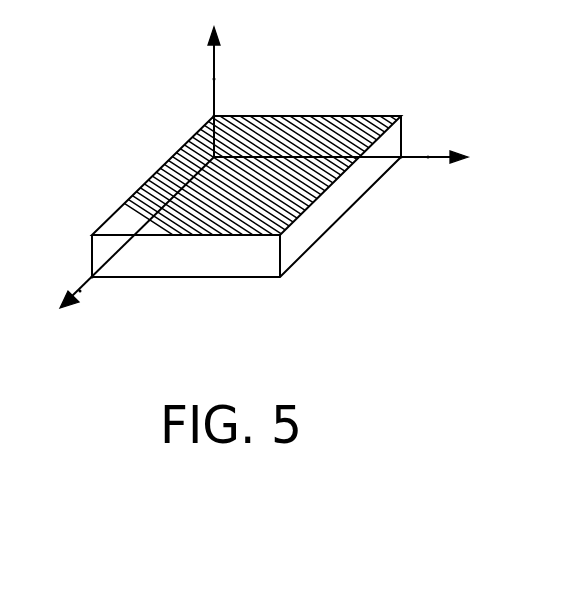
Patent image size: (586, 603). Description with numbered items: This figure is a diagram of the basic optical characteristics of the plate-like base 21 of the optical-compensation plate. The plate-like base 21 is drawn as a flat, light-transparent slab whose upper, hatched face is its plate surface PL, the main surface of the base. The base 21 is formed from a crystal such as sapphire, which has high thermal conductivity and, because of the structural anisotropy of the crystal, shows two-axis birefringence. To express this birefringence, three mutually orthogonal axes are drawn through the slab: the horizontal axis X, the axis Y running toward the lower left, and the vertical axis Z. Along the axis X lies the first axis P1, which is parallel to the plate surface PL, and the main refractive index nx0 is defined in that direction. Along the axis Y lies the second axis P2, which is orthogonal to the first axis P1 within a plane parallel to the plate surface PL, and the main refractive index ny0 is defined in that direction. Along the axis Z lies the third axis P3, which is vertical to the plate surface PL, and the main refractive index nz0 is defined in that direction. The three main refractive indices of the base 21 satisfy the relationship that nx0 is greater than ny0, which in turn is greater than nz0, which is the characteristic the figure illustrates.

The plate-like base 21 is at (150, 178).
The plate surface PL is at (327, 119).
The first axis P1 is at (428, 156).
The second axis P2 is at (79, 291).
The third axis P3 is at (212, 79).
The main refractive index in the first axis direction nx0 is at (420, 173).
The main refractive index in the second axis direction ny0 is at (111, 293).
The main refractive index in the third axis direction nz0 is at (236, 97).
The X axis X is at (352, 160).
The Y axis Y is at (128, 248).
The Z axis Z is at (213, 81).